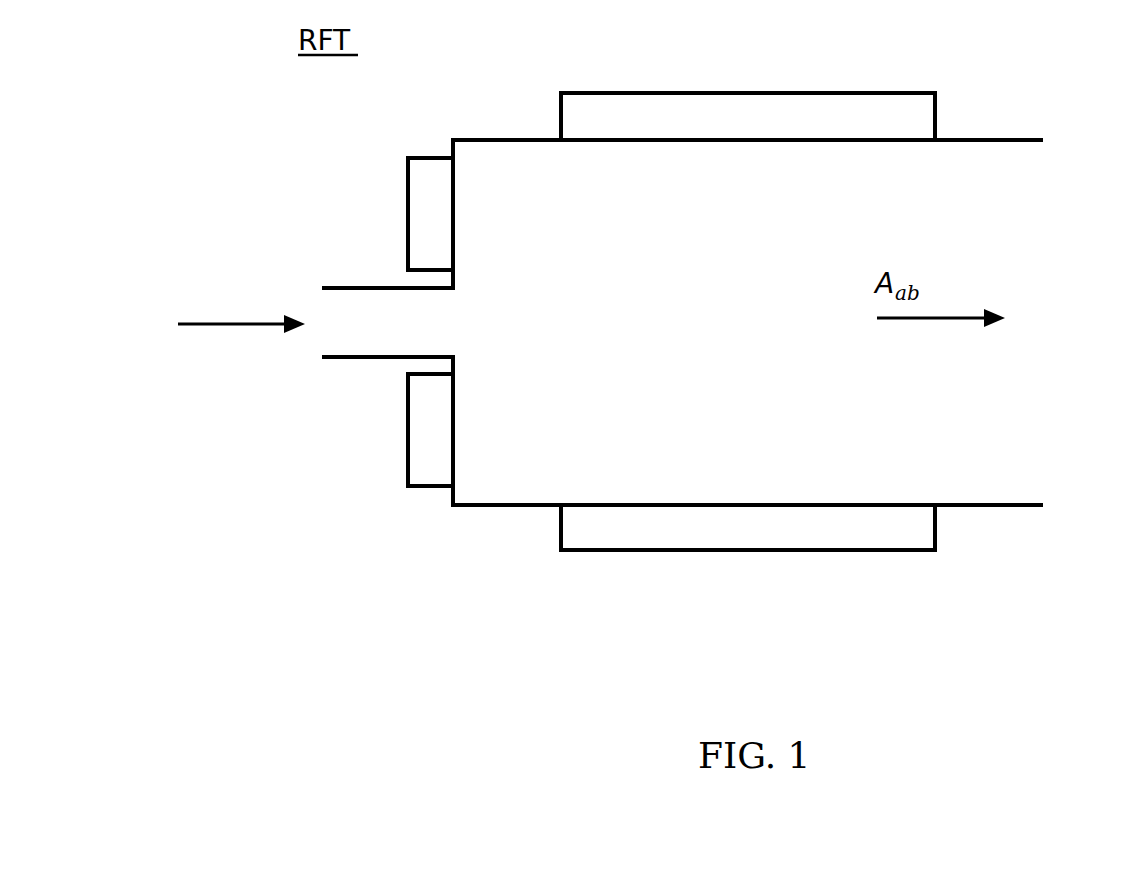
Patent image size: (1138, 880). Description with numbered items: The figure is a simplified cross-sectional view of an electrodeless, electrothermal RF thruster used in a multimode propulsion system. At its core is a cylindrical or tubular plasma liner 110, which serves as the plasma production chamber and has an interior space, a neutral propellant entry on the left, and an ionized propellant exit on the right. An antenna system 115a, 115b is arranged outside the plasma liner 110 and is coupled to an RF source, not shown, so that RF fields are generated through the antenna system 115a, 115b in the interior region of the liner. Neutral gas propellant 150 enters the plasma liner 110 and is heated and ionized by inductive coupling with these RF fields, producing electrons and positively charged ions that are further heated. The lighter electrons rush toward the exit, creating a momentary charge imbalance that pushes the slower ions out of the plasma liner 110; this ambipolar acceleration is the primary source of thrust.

The plasma liner 110 is at (687, 305).
The antenna system 115a is at (748, 324).
The antenna system 115b is at (405, 322).
The neutral gas propellant 150 is at (234, 339).